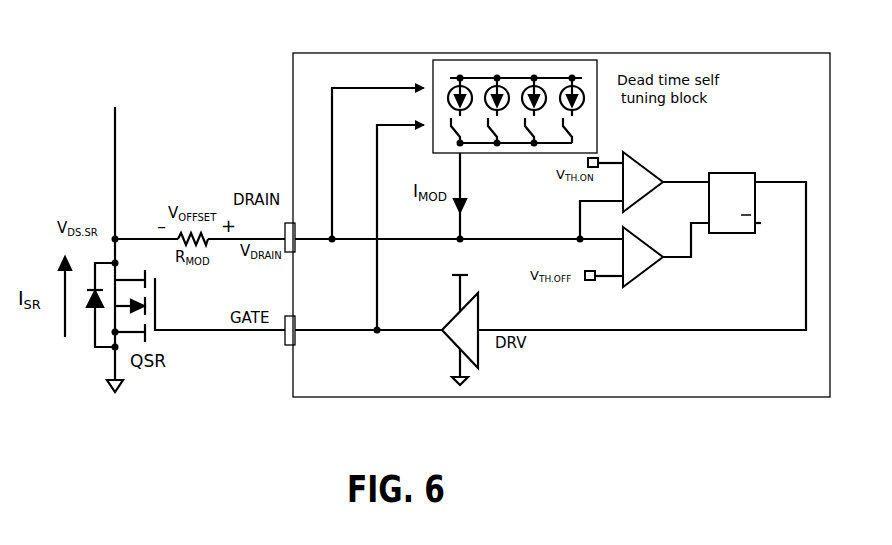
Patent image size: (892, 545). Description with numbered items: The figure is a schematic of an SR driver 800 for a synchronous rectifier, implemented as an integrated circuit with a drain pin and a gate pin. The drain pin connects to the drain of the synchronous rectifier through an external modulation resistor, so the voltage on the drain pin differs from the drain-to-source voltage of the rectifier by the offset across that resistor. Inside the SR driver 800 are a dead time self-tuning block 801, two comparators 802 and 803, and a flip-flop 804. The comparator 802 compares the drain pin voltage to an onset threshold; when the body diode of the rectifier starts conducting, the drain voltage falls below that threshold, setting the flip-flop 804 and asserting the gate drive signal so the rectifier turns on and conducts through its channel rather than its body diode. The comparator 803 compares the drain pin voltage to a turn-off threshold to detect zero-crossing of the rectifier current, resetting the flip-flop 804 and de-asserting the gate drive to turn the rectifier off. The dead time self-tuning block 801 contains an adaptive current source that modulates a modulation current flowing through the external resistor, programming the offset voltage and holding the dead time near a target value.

The SR driver 800 is at (362, 53).
The dead time self-tuning block 801 is at (552, 60).
The comparator 802 is at (645, 158).
The comparator 803 is at (638, 278).
The flip-flop 804 is at (733, 173).